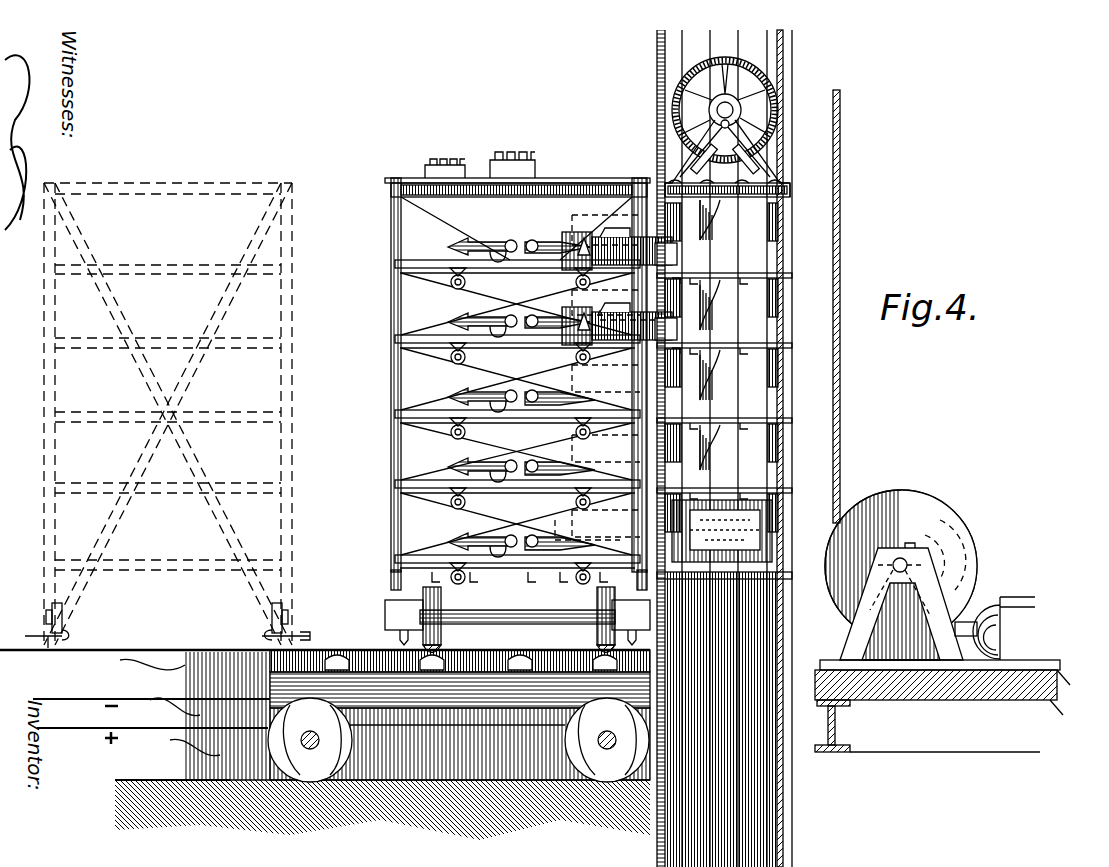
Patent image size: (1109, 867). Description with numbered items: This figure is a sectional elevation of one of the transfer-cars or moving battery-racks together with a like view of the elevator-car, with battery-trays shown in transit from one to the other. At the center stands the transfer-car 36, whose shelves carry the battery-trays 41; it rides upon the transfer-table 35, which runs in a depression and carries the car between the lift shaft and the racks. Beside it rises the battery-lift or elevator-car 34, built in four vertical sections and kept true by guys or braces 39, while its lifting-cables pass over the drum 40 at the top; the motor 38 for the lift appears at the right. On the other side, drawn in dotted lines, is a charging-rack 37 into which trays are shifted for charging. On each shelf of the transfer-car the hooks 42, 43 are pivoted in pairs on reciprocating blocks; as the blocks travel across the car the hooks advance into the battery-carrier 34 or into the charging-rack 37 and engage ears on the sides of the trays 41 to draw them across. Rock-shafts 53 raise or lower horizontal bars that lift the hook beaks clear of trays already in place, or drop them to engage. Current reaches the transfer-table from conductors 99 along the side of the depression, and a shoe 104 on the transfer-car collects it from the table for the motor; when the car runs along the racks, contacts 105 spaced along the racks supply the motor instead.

The elevator-car 34 is at (782, 248).
The transfer-table 35 is at (370, 672).
The transfer-car 36 is at (548, 183).
The charging-rack 37 is at (160, 172).
The motor 38 is at (977, 566).
The guys or braces 39 is at (745, 168).
The drum 40 is at (672, 112).
The battery-tray 41 is at (565, 237).
The hook 42 is at (462, 396).
The hook 43 is at (560, 388).
The rock-shaft 53 is at (452, 286).
The conductors 99 is at (151, 709).
The shoe 104 is at (460, 654).
The contacts 105 is at (36, 636).